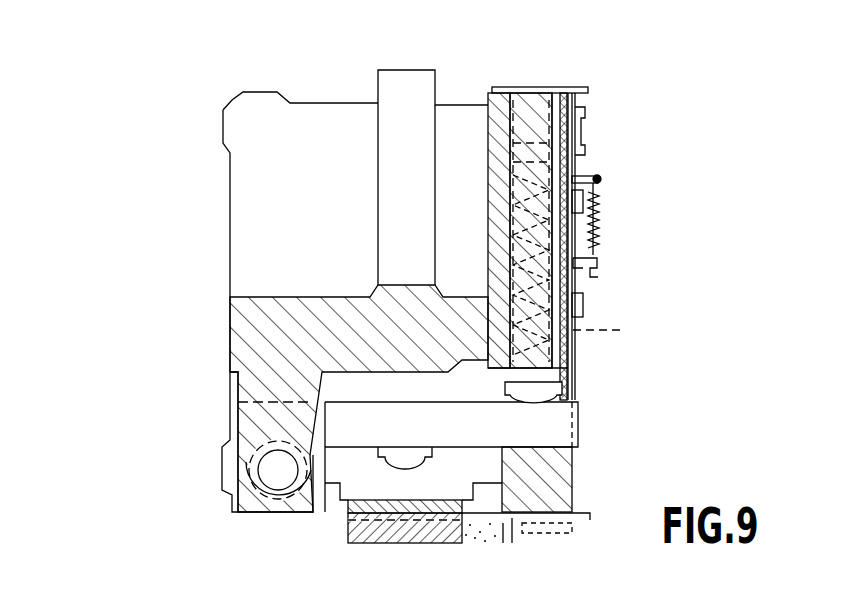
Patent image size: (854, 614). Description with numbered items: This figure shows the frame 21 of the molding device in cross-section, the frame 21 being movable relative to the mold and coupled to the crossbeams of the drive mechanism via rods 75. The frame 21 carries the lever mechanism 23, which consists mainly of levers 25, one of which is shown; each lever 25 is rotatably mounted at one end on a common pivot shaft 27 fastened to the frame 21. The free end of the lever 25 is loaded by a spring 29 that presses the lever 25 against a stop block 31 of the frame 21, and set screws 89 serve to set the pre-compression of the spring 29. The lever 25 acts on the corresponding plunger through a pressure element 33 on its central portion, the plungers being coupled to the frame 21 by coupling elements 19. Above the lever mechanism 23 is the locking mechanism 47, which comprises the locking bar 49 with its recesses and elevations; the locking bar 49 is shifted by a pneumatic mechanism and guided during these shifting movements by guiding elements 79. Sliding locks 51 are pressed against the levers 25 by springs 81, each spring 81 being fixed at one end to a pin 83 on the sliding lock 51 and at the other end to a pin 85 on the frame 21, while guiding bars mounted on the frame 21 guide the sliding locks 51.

The frame 21 is at (187, 132).
The lever mechanism 23 is at (222, 322).
The rod 75 is at (438, 85).
The set screw 89 is at (520, 85).
The locking bar 49 is at (566, 100).
The guiding element 79 is at (585, 132).
The locking mechanism 47 is at (578, 163).
The pin 83 is at (601, 177).
The spring 81 is at (600, 208).
The pin 85 is at (582, 270).
The spring 29 is at (609, 330).
The sliding lock 51 is at (572, 377).
The lever 25 is at (578, 427).
The stop block 31 is at (575, 485).
The coupling element 19 is at (485, 513).
The pivot shaft 27 is at (273, 465).
The pressure element 33 is at (425, 462).